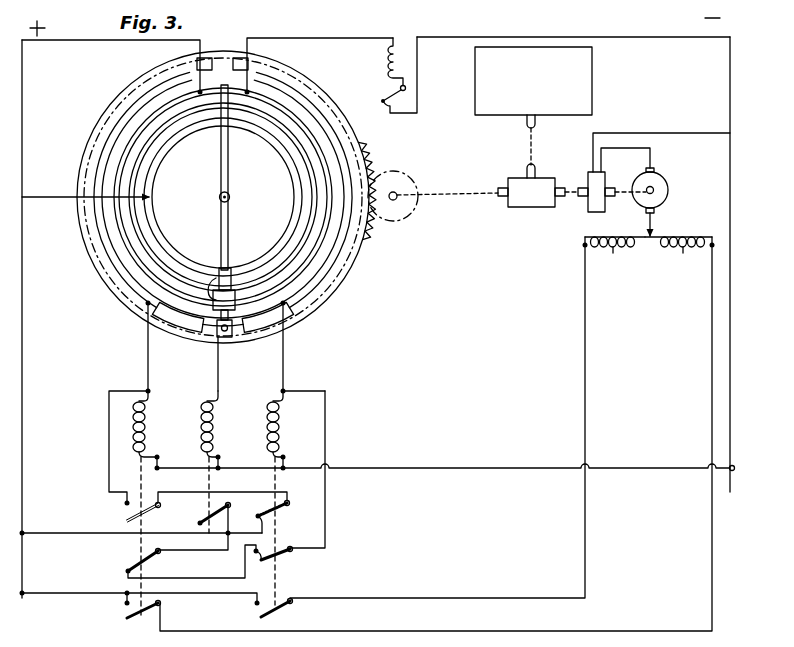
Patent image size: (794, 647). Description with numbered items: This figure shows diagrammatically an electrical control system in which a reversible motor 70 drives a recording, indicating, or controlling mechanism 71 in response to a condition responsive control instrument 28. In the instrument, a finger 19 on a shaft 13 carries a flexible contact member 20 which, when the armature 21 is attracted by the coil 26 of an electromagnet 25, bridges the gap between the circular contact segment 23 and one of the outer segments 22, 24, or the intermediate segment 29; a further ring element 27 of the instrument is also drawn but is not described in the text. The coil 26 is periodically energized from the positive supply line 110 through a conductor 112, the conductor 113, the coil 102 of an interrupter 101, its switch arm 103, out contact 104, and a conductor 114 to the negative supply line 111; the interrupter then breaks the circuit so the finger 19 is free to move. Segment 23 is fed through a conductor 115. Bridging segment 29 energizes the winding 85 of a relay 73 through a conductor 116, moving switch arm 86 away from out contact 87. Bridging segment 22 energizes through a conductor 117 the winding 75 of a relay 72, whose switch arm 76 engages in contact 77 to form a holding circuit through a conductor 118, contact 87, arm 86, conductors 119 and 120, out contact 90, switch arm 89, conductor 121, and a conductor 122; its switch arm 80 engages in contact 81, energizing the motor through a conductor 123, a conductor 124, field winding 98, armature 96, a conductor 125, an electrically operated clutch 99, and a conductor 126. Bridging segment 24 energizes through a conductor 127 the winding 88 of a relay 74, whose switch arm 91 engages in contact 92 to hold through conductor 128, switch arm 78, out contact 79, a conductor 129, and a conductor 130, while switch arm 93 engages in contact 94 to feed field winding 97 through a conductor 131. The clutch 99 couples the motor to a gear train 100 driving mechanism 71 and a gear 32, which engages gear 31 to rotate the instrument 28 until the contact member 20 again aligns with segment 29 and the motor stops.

The shaft 13 is at (230, 196).
The finger 19 is at (229, 226).
The flexible contact member 20 is at (233, 270).
The armature 21 is at (209, 281).
The contact segment 22 is at (120, 275).
The circular contact segment 23 is at (300, 224).
The contact segment 24 is at (335, 280).
The electromagnet 25 is at (145, 149).
The coil 26 is at (143, 263).
The ring 27 is at (123, 240).
The control instrument 28 is at (370, 260).
The contact segment 29 is at (234, 333).
The gear 31 is at (368, 146).
The gear 32 is at (407, 173).
The reversible motor 70 is at (669, 189).
The recording, indicating, or controlling mechanism 71 is at (592, 80).
The relay 72 is at (159, 426).
The relay 73 is at (232, 424).
The relay 74 is at (296, 420).
The winding 75 is at (146, 440).
The switch arm 76 is at (143, 513).
The in contact 77 is at (123, 504).
The switch arm 78 is at (150, 558).
The out contact 79 is at (125, 571).
The switch arm 80 is at (148, 615).
The in contact 81 is at (124, 605).
The winding 85 is at (214, 435).
The switch arm 86 is at (222, 514).
The out contact 87 is at (197, 521).
The winding 88 is at (280, 433).
The switch arm 89 is at (291, 505).
The out contact 90 is at (259, 514).
The switch arm 91 is at (292, 553).
The in contact 92 is at (257, 556).
The switch arm 93 is at (292, 604).
The in contact 94 is at (254, 604).
The armature 96 is at (662, 197).
The field winding 97 is at (614, 254).
The field winding 98 is at (680, 253).
The electrically operated clutch 99 is at (590, 209).
The gear train 100 is at (527, 204).
The interrupter 101 is at (375, 83).
The coil 102 is at (387, 52).
The switch arm 103 is at (386, 98).
The out contact 104 is at (387, 107).
The supply line 110 is at (22, 108).
The supply line 111 is at (730, 83).
The conductor 112 is at (97, 42).
The conductor 113 is at (302, 36).
The conductor 114 is at (467, 36).
The conductor 115 is at (85, 209).
The conductor 116 is at (422, 470).
The conductor 117 is at (147, 347).
The conductor 118 is at (57, 533).
The conductor 119 is at (236, 505).
The conductor 120 is at (262, 529).
The conductor 121 is at (289, 493).
The conductor 122 is at (109, 436).
The conductor 123 is at (38, 593).
The conductor 124 is at (465, 631).
The conductor 125 is at (613, 148).
The conductor 126 is at (648, 133).
The conductor 127 is at (288, 347).
The conductor 128 is at (165, 546).
The conductor 129 is at (182, 578).
The conductor 130 is at (327, 514).
The conductor 131 is at (460, 598).